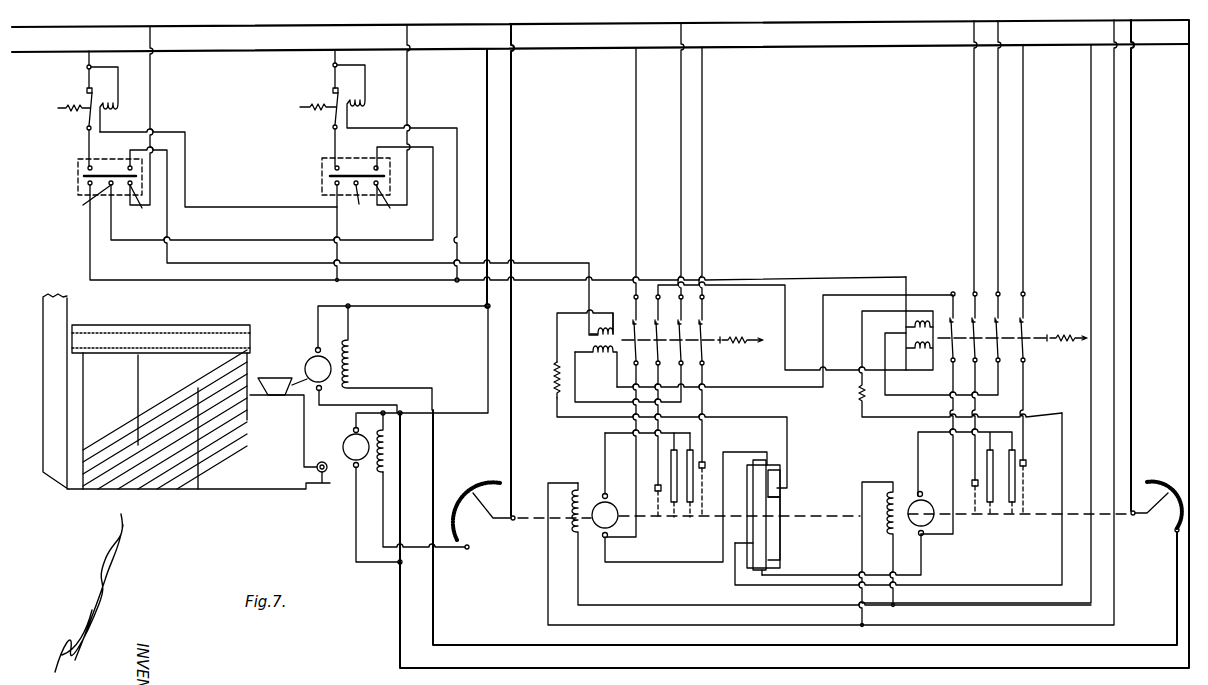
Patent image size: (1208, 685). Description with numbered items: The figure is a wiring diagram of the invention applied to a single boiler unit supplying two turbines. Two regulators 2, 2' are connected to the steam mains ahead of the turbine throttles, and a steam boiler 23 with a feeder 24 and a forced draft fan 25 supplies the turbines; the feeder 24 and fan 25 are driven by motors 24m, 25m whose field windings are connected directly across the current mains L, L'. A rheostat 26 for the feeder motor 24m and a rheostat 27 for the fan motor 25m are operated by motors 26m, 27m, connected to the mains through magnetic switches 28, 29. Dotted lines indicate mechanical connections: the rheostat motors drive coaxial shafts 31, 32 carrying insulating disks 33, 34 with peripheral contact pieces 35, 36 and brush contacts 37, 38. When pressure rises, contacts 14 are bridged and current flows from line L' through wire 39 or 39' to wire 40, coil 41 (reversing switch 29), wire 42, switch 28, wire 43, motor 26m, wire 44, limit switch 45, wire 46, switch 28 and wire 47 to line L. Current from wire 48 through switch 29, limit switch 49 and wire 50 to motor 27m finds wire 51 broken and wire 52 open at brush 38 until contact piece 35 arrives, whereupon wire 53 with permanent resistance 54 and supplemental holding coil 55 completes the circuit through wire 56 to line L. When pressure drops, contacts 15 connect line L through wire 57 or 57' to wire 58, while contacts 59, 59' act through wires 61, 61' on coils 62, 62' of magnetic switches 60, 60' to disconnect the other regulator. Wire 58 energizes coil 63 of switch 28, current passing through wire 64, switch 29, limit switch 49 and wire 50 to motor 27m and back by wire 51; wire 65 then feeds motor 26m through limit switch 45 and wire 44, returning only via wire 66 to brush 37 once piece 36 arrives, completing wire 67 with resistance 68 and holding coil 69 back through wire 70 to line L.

The current main L is at (600, 13).
The current main L' is at (600, 58).
The regulator 2 is at (95, 177).
The regulator 2' is at (342, 176).
The contacts 14 is at (234, 168).
The contacts 15 is at (86, 185).
The steam boiler 23 is at (175, 336).
The feeder 24 is at (277, 385).
The feeder motor 24m is at (311, 355).
The forced draft fan 25 is at (323, 474).
The fan motor 25m is at (346, 455).
The rheostat 26 is at (1166, 470).
The rheostat motor 26m is at (915, 500).
The rheostat 27 is at (470, 547).
The rheostat motor 27m is at (600, 500).
The magnetic switch 28 is at (1043, 344).
The magnetic switch 29 is at (725, 345).
The shaft 31 is at (830, 515).
The shaft 32 is at (672, 508).
The disk 33 is at (780, 546).
The disk 34 is at (752, 483).
The contact piece 35 is at (780, 499).
The contact piece 36 is at (752, 540).
The brush contact 37 is at (760, 578).
The brush contact 38 is at (767, 452).
The wire 39 is at (72, 147).
The wire 39' is at (315, 147).
The wire 40 is at (569, 254).
The coil 41 is at (596, 360).
The wire 42 is at (805, 388).
The wire 43 is at (950, 537).
The wire 44 is at (916, 437).
The limit switch 45 is at (1010, 506).
The wire 46 is at (980, 438).
The wire 47 is at (972, 156).
The wire 48 is at (705, 179).
The limit switch 49 is at (690, 508).
The wire 50 is at (603, 452).
The wire 51 is at (634, 483).
The wire 52 is at (671, 564).
The wire 53 is at (574, 312).
The permanent resistance 54 is at (555, 386).
The supplemental holding coil 55 is at (604, 328).
The wire 56 is at (679, 179).
The wire 57 is at (155, 115).
The wire 57' is at (407, 115).
The wire 58 is at (458, 283).
The contact 59 is at (85, 203).
The contact 59' is at (354, 229).
The magnetic switch 60 is at (73, 90).
The magnetic switch 60' is at (316, 89).
The wire 61 is at (272, 194).
The wire 61' is at (218, 168).
The coil 62 is at (397, 171).
The coil 62' is at (113, 99).
The coil 63 is at (964, 323).
The wire 64 is at (787, 330).
The wire 65 is at (1025, 166).
The wire 66 is at (821, 578).
The wire 67 is at (978, 580).
The permanent resistance 68 is at (858, 400).
The supplemental holding coil 69 is at (922, 318).
The wire 70 is at (996, 182).